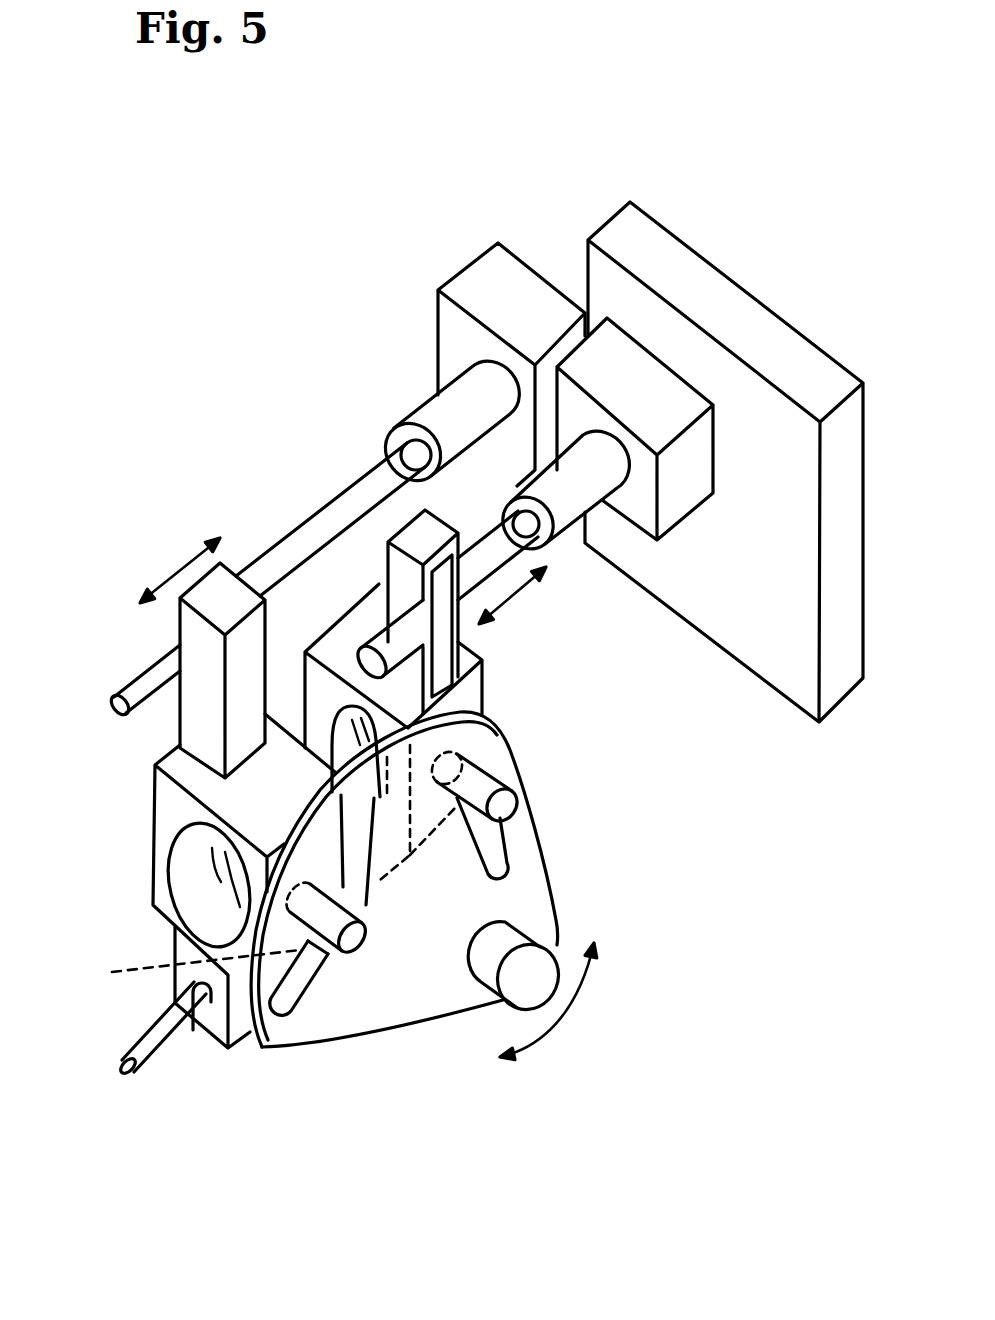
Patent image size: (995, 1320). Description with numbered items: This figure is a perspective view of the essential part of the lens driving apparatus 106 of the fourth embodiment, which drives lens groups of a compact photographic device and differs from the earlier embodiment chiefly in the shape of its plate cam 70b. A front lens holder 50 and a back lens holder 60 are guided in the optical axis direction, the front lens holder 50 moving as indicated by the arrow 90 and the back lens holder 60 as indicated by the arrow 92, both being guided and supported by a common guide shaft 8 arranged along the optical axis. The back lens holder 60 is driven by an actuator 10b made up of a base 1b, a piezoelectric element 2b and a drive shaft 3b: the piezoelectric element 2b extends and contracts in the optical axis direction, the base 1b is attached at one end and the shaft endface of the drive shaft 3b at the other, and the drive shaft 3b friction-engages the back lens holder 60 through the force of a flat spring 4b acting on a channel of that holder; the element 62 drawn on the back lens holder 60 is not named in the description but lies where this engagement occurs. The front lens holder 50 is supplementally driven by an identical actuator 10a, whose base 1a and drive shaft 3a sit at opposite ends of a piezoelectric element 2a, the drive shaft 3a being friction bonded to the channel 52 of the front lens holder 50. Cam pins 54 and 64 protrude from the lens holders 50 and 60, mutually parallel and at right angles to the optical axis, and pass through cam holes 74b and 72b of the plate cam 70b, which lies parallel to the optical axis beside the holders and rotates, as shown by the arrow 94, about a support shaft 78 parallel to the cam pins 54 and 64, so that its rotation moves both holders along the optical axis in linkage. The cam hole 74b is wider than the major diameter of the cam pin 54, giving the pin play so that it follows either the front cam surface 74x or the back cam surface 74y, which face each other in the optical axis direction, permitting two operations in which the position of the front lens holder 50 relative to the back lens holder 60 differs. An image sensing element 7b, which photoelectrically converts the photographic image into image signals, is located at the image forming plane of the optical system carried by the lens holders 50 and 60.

The lens driving apparatus 106 is at (210, 306).
The actuator 10a is at (535, 104).
The actuator 10b is at (748, 224).
The base 1a is at (505, 278).
The base 1b is at (648, 375).
The piezoelectric element 2a is at (437, 413).
The piezoelectric element 2b is at (590, 475).
The drive shaft 3a is at (320, 522).
The drive shaft 3b is at (508, 548).
The flat spring 4b is at (447, 663).
The image sensing element 7b is at (775, 697).
The common guide shaft 8 is at (172, 1037).
The front lens holder 50 is at (153, 852).
The channel 52 is at (183, 658).
The cam pin 54 is at (362, 947).
The back lens holder 60 is at (477, 714).
The slide post 62 is at (458, 648).
The cam pin 64 is at (508, 768).
The plate cam 70b is at (540, 831).
The cam hole 72b is at (513, 866).
The cam hole 74b is at (278, 1030).
The cam surface 74x is at (172, 969).
The cam surface 74y is at (330, 1017).
The support shaft 78 is at (528, 934).
The arrow 90 is at (167, 560).
The arrow 92 is at (515, 605).
The arrow 94 is at (573, 1013).